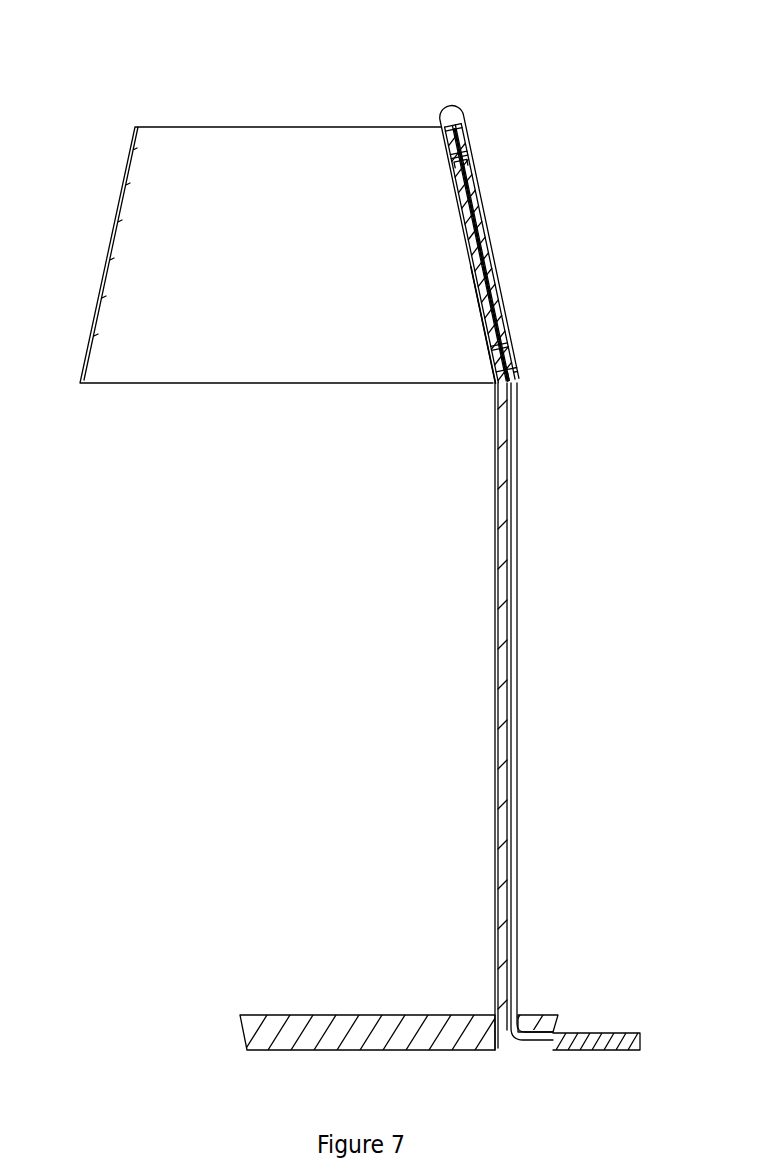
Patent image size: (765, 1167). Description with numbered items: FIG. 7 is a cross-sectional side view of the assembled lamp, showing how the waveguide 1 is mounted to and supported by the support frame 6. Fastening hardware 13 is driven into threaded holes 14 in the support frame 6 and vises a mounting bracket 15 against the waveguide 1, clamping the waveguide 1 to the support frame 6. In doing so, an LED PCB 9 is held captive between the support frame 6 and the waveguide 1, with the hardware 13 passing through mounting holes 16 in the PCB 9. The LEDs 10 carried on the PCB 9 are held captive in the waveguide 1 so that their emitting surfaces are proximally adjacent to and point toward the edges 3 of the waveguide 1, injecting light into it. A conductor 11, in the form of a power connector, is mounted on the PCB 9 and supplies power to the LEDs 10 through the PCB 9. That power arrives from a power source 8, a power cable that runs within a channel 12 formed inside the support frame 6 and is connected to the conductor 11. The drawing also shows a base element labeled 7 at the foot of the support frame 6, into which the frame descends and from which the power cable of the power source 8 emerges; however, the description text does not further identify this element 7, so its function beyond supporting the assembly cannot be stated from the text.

The waveguide 1 is at (120, 190).
The edges 3 is at (473, 108).
The support frame 6 is at (480, 205).
The base 7 is at (375, 1020).
The power source 8 is at (494, 388).
The LED PCB 9 is at (496, 303).
The LEDs 10 is at (485, 250).
The conductor 11 is at (510, 377).
The channel 12 is at (518, 392).
The hardware 13 is at (470, 150).
The threaded holes 14 is at (465, 168).
The mounting bracket 15 is at (478, 307).
The mounting holes 16 is at (470, 142).